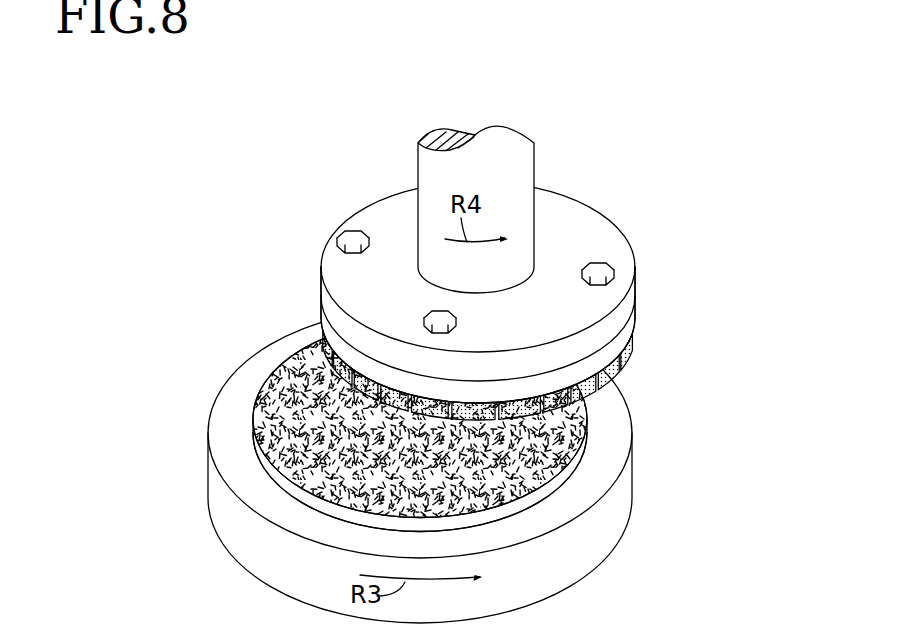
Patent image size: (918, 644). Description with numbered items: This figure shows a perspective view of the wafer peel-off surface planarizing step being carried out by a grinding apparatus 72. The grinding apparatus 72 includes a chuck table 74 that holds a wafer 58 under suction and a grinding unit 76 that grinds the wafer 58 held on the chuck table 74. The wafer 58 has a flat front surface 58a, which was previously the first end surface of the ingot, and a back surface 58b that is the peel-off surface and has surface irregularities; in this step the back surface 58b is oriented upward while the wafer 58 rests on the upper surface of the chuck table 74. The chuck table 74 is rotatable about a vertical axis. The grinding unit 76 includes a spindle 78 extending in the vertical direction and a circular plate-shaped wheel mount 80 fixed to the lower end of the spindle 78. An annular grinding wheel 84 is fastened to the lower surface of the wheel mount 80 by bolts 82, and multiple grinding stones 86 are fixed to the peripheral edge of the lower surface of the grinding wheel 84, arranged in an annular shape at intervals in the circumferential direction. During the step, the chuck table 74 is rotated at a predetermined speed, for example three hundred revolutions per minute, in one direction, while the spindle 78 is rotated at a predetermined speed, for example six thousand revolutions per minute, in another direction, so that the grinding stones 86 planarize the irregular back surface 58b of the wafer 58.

The wafer 58 is at (365, 431).
The front surface 58a is at (278, 485).
The back surface 58b is at (270, 450).
The grinding apparatus 72 is at (562, 338).
The chuck table 74 is at (618, 508).
The grinding unit 76 is at (539, 301).
The spindle 78 is at (524, 166).
The wheel mount 80 is at (583, 233).
The bolts 82 is at (597, 266).
The grinding wheel 84 is at (622, 328).
The grinding stones 86 is at (600, 396).